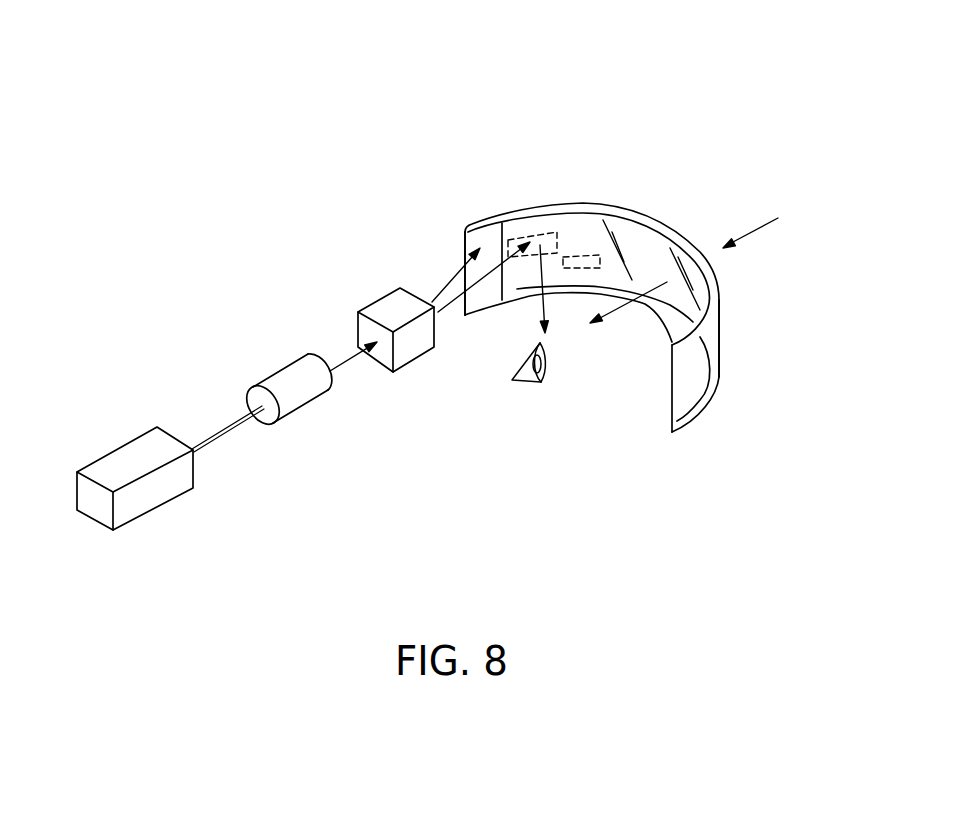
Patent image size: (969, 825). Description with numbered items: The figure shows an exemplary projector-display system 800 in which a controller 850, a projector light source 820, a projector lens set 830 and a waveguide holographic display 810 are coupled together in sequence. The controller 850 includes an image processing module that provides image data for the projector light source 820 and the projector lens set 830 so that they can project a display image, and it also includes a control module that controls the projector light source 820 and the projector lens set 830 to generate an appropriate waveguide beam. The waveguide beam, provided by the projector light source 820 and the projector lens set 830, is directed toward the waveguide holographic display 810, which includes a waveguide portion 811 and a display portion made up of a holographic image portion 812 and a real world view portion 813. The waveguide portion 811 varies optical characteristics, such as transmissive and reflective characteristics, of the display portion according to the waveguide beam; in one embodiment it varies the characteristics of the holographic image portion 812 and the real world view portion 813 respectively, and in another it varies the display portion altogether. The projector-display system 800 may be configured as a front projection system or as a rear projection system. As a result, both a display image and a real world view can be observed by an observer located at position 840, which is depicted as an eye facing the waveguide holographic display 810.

The projector-display system 800 is at (636, 70).
The waveguide holographic display 810 is at (723, 416).
The waveguide portion 811 is at (488, 230).
The holographic image portion 812 is at (588, 256).
The real world view portion 813 is at (721, 326).
The projector light source 820 is at (303, 413).
The projector lens set 830 is at (372, 298).
The position 840 is at (528, 387).
The controller 850 is at (108, 450).